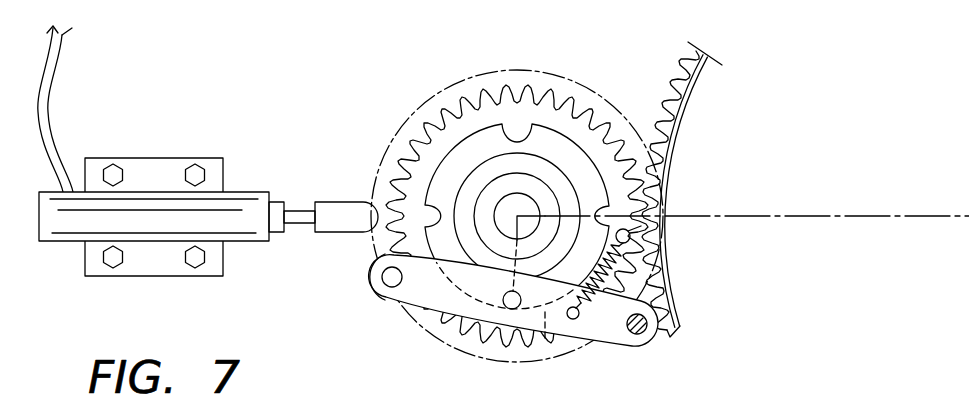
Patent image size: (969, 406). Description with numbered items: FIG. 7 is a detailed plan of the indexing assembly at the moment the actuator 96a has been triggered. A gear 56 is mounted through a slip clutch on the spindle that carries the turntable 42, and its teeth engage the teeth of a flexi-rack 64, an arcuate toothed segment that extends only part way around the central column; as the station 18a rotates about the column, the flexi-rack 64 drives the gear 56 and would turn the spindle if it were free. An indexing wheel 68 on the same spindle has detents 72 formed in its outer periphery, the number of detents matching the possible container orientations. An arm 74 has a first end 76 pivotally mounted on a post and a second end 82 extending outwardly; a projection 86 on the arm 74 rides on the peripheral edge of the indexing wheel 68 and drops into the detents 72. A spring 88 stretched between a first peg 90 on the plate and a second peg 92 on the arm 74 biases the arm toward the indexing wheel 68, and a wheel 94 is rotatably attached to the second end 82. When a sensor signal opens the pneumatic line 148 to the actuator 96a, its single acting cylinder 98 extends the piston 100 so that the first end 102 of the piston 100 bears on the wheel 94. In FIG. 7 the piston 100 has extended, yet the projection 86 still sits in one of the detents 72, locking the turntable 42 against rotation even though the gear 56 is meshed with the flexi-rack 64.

The pneumatic line 148 is at (62, 68).
The pneumatic cylinder 98 is at (110, 205).
The actuator 96a is at (160, 189).
The piston 100 is at (296, 210).
The first end of the piston 102 is at (333, 202).
The turntable 42 is at (472, 72).
The gear 18a is at (638, 213).
The gear 56 is at (443, 112).
The flexi-rack 64 is at (687, 186).
The indexing wheel 68 is at (603, 175).
The first end of the arm 76 is at (655, 332).
The second end of the arm 82 is at (386, 284).
The wheel 94 is at (374, 280).
The second peg 92 is at (618, 330).
The projection 86 is at (497, 312).
The detents 72 is at (545, 340).
The arm 74 is at (451, 319).
The first peg 90 is at (668, 216).
The spring 88 is at (653, 250).